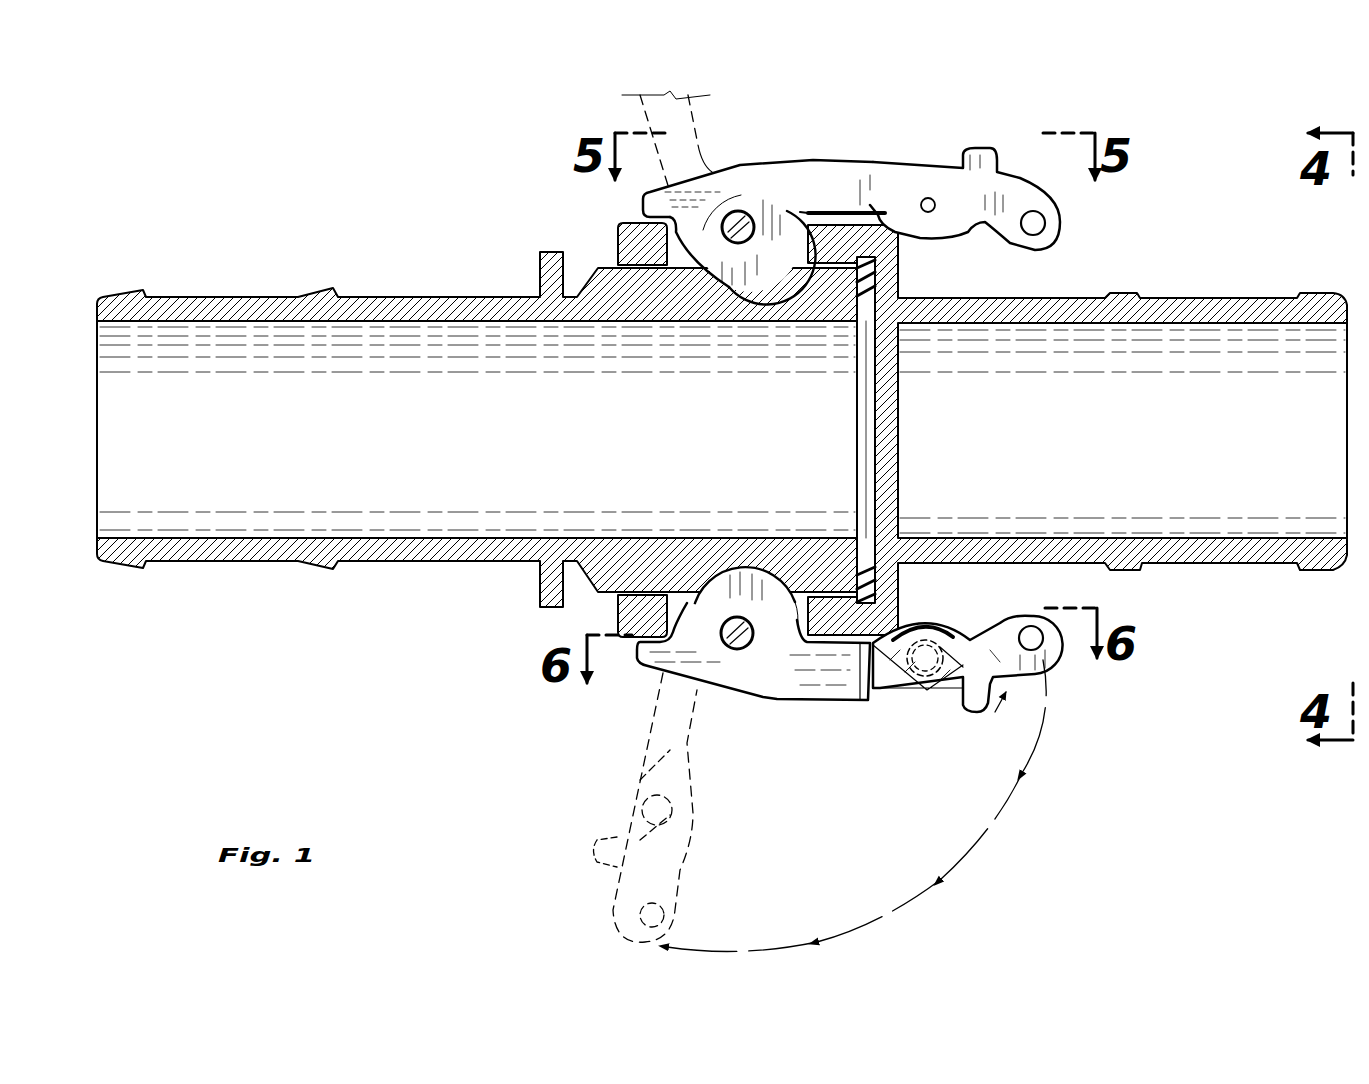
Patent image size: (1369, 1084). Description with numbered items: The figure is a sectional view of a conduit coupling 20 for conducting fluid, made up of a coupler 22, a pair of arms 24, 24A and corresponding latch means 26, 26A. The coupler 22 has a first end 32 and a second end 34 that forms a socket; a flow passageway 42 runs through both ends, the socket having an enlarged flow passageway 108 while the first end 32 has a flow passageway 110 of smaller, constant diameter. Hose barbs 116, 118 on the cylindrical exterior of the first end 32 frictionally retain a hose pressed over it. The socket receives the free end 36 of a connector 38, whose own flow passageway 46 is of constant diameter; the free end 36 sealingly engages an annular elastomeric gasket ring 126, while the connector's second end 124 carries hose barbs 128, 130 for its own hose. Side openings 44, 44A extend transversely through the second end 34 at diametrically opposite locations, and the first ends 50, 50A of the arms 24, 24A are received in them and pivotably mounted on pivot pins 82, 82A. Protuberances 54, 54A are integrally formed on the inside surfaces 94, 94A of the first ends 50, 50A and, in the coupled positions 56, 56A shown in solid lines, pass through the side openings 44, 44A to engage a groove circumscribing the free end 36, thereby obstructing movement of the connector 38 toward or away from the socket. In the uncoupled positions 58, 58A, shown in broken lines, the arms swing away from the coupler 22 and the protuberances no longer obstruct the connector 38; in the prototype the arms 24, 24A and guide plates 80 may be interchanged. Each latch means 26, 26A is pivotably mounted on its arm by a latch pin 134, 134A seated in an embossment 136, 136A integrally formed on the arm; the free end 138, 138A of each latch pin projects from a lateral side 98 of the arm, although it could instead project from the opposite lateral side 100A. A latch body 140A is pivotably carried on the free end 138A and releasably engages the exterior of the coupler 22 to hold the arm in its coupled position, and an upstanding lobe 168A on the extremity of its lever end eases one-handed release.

The conduit coupling 20 is at (985, 775).
The coupler 22 is at (1077, 431).
The arm 24 is at (824, 703).
The second arm 24A is at (833, 235).
The latch means 26 is at (1007, 686).
The second latch means 26A is at (1017, 171).
The first end 32 is at (1077, 435).
The second end 34 is at (610, 280).
The free end 36 is at (912, 430).
The connector 38 is at (477, 393).
The flow passageway 42 is at (1140, 465).
The side opening 44 is at (606, 556).
The second side opening 44A is at (668, 270).
The flow passageway 46 is at (420, 455).
The first end 50 is at (759, 569).
The first end 50A is at (738, 287).
The protuberance 54 is at (759, 569).
The protuberance 54A is at (738, 287).
The coupled position 56 is at (1010, 686).
The coupled position 56A is at (1017, 187).
The uncoupled position 58 is at (647, 733).
The uncoupled position 58A is at (650, 122).
The guide plate 80 is at (685, 695).
The pivot pin 82 is at (737, 652).
The pivot pin 82A is at (744, 220).
The inside surface 94 is at (690, 740).
The inside surface 94A is at (697, 168).
The lateral side 98 is at (1007, 686).
The lateral side 100A is at (1017, 188).
The enlarged flow passageway 108 is at (630, 593).
The flow passageway 110 is at (1077, 430).
The hose barb 116 is at (1077, 435).
The hose barb 118 is at (1077, 435).
The second end 124 is at (477, 408).
The gasket ring 126 is at (878, 530).
The hose barb 128 is at (477, 408).
The hose barb 130 is at (477, 408).
The latch pin 134 is at (968, 707).
The latch pin 134A is at (1017, 188).
The embossment 136 is at (968, 686).
The embossment 136A is at (1017, 188).
The free end 138 is at (968, 664).
The free end 138A is at (1017, 188).
The latch body 140A is at (987, 170).
The upstanding lobe 168A is at (1017, 188).